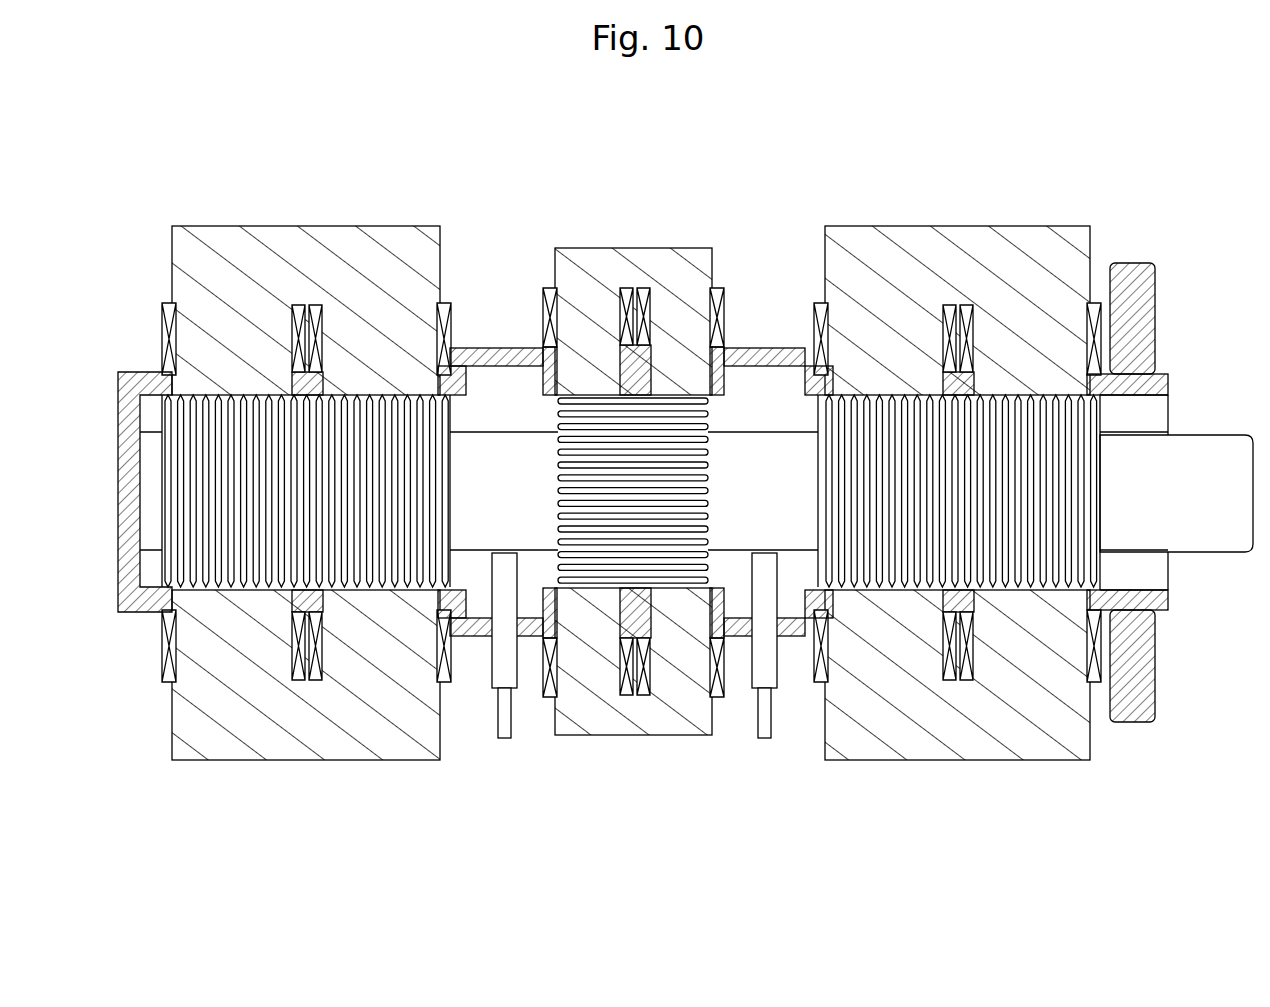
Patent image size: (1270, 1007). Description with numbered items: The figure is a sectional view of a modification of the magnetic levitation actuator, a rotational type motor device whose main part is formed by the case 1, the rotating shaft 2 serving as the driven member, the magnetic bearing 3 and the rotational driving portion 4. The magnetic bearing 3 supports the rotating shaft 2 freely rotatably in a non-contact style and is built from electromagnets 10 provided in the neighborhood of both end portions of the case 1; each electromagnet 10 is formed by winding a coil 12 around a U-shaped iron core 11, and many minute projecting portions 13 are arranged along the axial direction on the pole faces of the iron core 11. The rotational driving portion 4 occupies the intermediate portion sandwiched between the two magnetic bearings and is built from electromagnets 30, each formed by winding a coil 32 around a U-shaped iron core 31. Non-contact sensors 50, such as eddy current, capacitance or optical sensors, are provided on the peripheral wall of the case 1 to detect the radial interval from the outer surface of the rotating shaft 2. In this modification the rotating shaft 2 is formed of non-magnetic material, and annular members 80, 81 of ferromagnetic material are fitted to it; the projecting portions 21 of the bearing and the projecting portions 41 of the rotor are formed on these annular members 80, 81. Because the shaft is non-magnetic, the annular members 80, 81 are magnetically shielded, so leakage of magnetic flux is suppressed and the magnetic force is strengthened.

The case 1 is at (778, 346).
The rotating shaft 2 is at (1190, 433).
The magnetic bearing 3 is at (625, 485).
The rotational driving portion 4 is at (626, 474).
The electromagnet 10 is at (625, 490).
The iron core 11 is at (275, 226).
The coil 12 is at (165, 305).
The projecting portions 13 is at (203, 822).
The projecting portions 21 is at (447, 527).
The electromagnet 30 is at (626, 474).
The iron core 31 is at (633, 248).
The coil 32 is at (718, 288).
The projecting portions 41 is at (702, 504).
The non-contact sensors 50 is at (507, 740).
The annular member 80 is at (457, 456).
The annular member 81 is at (672, 490).